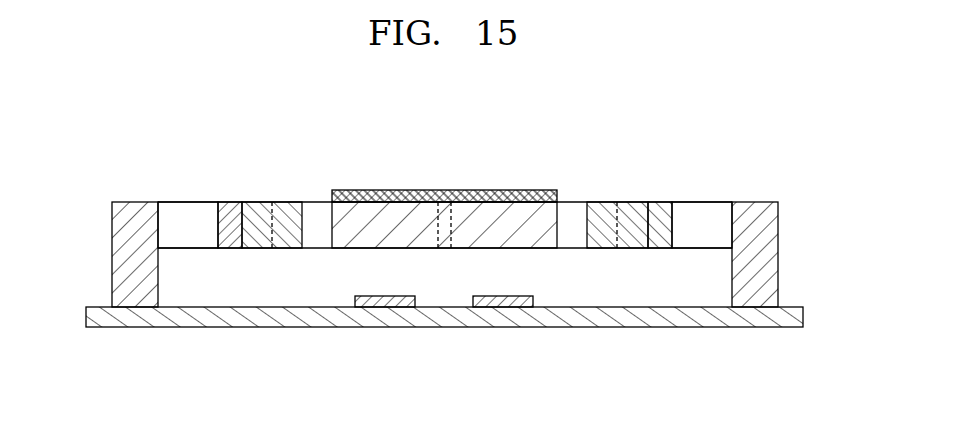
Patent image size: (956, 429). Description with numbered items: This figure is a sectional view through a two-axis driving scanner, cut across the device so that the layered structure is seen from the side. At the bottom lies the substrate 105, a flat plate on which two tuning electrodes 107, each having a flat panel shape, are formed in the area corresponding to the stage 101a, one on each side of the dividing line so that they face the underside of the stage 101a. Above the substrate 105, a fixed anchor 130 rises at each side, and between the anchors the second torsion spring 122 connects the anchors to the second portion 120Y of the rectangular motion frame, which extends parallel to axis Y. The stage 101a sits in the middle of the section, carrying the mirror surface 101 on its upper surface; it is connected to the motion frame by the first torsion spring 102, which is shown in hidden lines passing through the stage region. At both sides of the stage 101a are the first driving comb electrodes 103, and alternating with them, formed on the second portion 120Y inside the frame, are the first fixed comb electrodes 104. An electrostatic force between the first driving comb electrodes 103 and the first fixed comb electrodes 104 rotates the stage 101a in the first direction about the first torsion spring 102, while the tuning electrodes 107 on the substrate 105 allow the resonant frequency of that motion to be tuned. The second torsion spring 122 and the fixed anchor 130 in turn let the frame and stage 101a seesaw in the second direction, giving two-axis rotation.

The mirror surface 101 is at (520, 190).
The stage 101a is at (565, 205).
The first torsion spring 102 is at (466, 196).
The first driving comb electrodes 103 is at (317, 212).
The first fixed comb electrodes 104 is at (263, 210).
The substrate 105 is at (585, 313).
The tuning electrode 107 is at (482, 302).
The second portion of rectangular motion frame 120Y is at (228, 210).
The second torsion spring 122 is at (183, 210).
The fixed anchor 130 is at (124, 208).